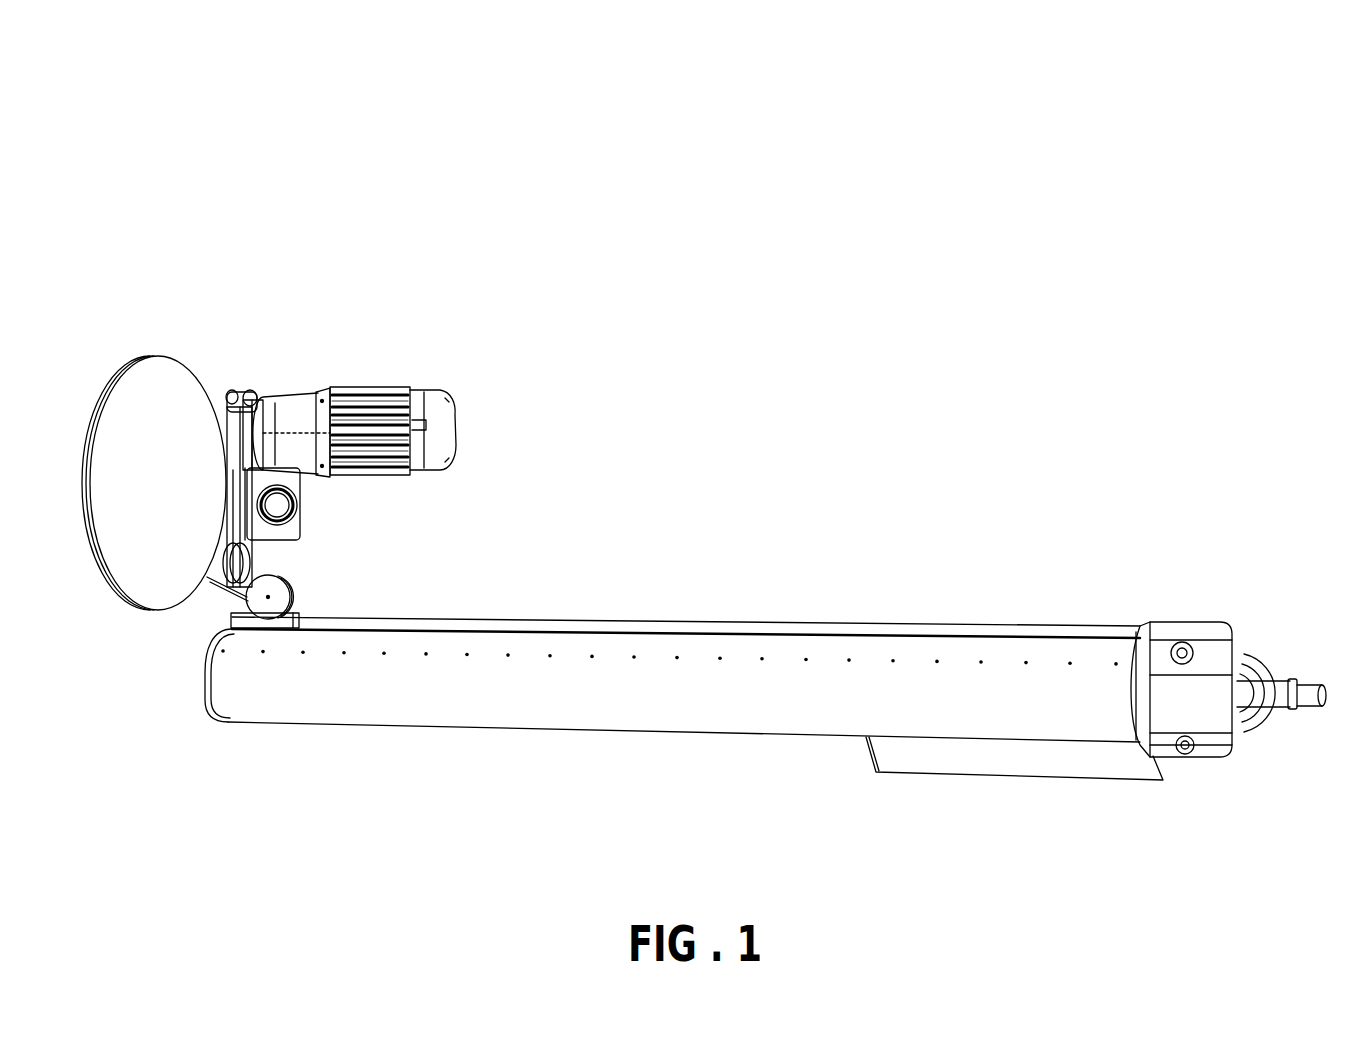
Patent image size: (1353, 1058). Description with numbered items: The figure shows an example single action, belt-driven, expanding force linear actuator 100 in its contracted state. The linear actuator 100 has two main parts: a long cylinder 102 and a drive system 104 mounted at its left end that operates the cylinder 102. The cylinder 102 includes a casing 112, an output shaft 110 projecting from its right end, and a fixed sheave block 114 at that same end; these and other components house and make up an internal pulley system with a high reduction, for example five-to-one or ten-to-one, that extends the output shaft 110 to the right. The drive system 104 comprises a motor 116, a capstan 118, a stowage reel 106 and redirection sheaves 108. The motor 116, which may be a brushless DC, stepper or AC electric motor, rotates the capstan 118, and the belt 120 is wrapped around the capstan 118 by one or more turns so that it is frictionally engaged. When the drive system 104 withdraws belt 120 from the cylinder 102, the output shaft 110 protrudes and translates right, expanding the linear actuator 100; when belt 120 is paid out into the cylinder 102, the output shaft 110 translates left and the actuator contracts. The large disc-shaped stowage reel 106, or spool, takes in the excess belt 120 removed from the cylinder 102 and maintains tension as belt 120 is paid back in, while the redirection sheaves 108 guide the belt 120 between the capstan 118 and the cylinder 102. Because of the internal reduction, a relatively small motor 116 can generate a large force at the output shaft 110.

The linear actuator 100 is at (236, 100).
The cylinder 102 is at (637, 790).
The drive system 104 is at (366, 328).
The stowage reel 106 is at (179, 530).
The redirection sheaves 108 is at (258, 572).
The output shaft 110 is at (1283, 680).
The casing 112 is at (880, 682).
The fixed sheave block 114 is at (1187, 714).
The motor 116 is at (440, 423).
The capstan 118 is at (236, 389).
The belt 120 is at (225, 585).